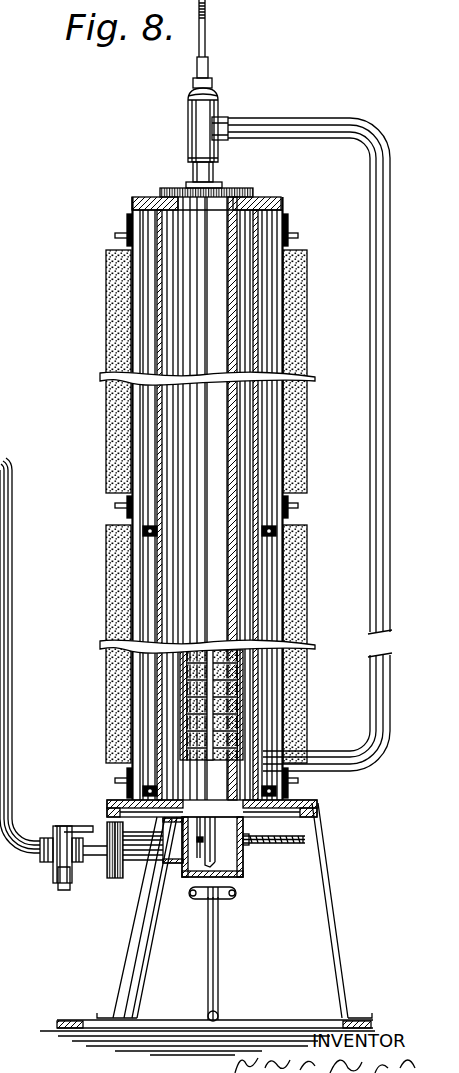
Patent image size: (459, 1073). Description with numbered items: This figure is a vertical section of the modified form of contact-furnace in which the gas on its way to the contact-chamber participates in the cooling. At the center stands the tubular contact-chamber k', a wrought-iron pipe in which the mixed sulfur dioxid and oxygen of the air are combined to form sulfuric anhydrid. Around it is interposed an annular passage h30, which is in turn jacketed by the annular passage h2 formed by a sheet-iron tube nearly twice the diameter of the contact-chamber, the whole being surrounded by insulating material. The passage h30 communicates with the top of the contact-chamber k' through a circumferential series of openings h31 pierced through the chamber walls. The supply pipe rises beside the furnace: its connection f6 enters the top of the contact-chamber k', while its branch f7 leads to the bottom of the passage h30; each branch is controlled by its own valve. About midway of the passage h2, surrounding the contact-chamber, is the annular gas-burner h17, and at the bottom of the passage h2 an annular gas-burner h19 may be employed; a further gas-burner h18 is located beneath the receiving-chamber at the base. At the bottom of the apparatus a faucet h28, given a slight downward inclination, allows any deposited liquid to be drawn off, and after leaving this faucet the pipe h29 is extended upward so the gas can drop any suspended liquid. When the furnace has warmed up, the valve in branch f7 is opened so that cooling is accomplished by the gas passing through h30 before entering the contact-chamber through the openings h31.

The openings h31 is at (149, 197).
The annular passage h30 is at (243, 467).
The annular passage h2 is at (270, 502).
The contact-chamber k' is at (217, 498).
The annular gas-burner h17 is at (277, 533).
The pipe h29 is at (13, 736).
The connection f6 is at (391, 330).
The branch f7 is at (391, 712).
The annular gas-burner h19 is at (283, 791).
The faucet h28 is at (63, 883).
The gas-burner h18 is at (238, 893).